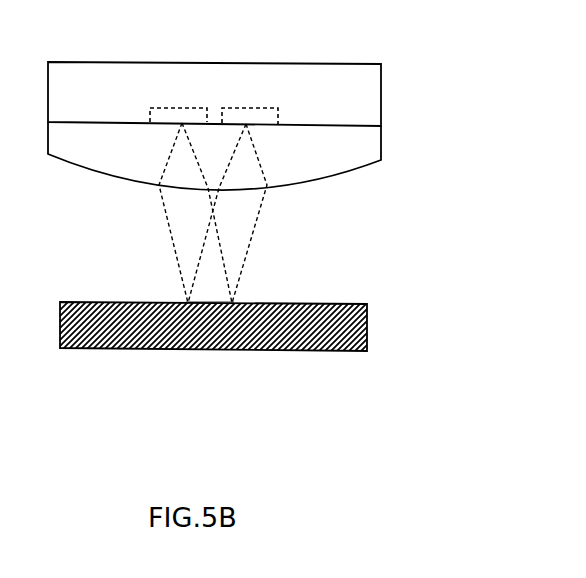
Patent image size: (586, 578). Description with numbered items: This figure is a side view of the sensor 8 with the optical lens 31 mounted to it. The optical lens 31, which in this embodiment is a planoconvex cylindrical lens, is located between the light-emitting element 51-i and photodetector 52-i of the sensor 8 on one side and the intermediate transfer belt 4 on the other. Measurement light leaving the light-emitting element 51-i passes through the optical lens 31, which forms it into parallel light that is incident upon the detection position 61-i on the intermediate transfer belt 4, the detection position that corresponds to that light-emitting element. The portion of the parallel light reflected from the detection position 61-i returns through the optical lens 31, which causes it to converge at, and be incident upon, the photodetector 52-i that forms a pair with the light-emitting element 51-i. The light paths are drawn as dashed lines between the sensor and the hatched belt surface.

The sensor 8 is at (357, 98).
The optical lens 31 is at (357, 152).
The light-emitting element 51-i is at (185, 108).
The photodetector 52-i is at (250, 108).
The detection position 61-i is at (210, 299).
The intermediate transfer belt 4 is at (340, 347).